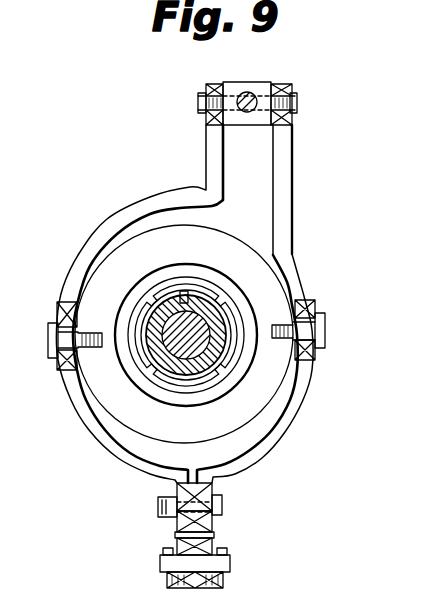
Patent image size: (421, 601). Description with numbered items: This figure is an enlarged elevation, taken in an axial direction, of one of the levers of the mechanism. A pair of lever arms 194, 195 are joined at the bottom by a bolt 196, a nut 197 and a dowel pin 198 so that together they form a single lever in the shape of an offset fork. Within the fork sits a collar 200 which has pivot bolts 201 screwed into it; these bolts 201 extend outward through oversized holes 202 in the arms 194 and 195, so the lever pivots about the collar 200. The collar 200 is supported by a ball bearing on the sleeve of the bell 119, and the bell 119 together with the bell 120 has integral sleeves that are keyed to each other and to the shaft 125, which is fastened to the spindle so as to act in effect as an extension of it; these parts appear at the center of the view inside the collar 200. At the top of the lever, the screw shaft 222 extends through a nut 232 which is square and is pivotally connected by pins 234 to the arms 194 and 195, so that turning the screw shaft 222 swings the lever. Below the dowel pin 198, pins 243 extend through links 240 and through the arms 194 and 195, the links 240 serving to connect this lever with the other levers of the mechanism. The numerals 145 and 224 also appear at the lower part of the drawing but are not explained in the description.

The bell 119 is at (202, 294).
The bell 120 is at (199, 358).
The shaft 125 is at (179, 352).
The frame member 145 is at (340, 593).
The lever arm 194 is at (125, 220).
The lever arm 195 is at (292, 210).
The bolt 196 is at (222, 505).
The nut 197 is at (158, 504).
The dowel pin 198 is at (214, 535).
The collar 200 is at (115, 418).
The pivot bolt 201 is at (54, 340).
The oversized hole 202 is at (70, 352).
The screw shaft 222 is at (247, 112).
The mounting block 224 is at (198, 586).
The nut 232 is at (255, 82).
The pin 234 is at (200, 104).
The link 240 is at (228, 557).
The pin 243 is at (160, 562).